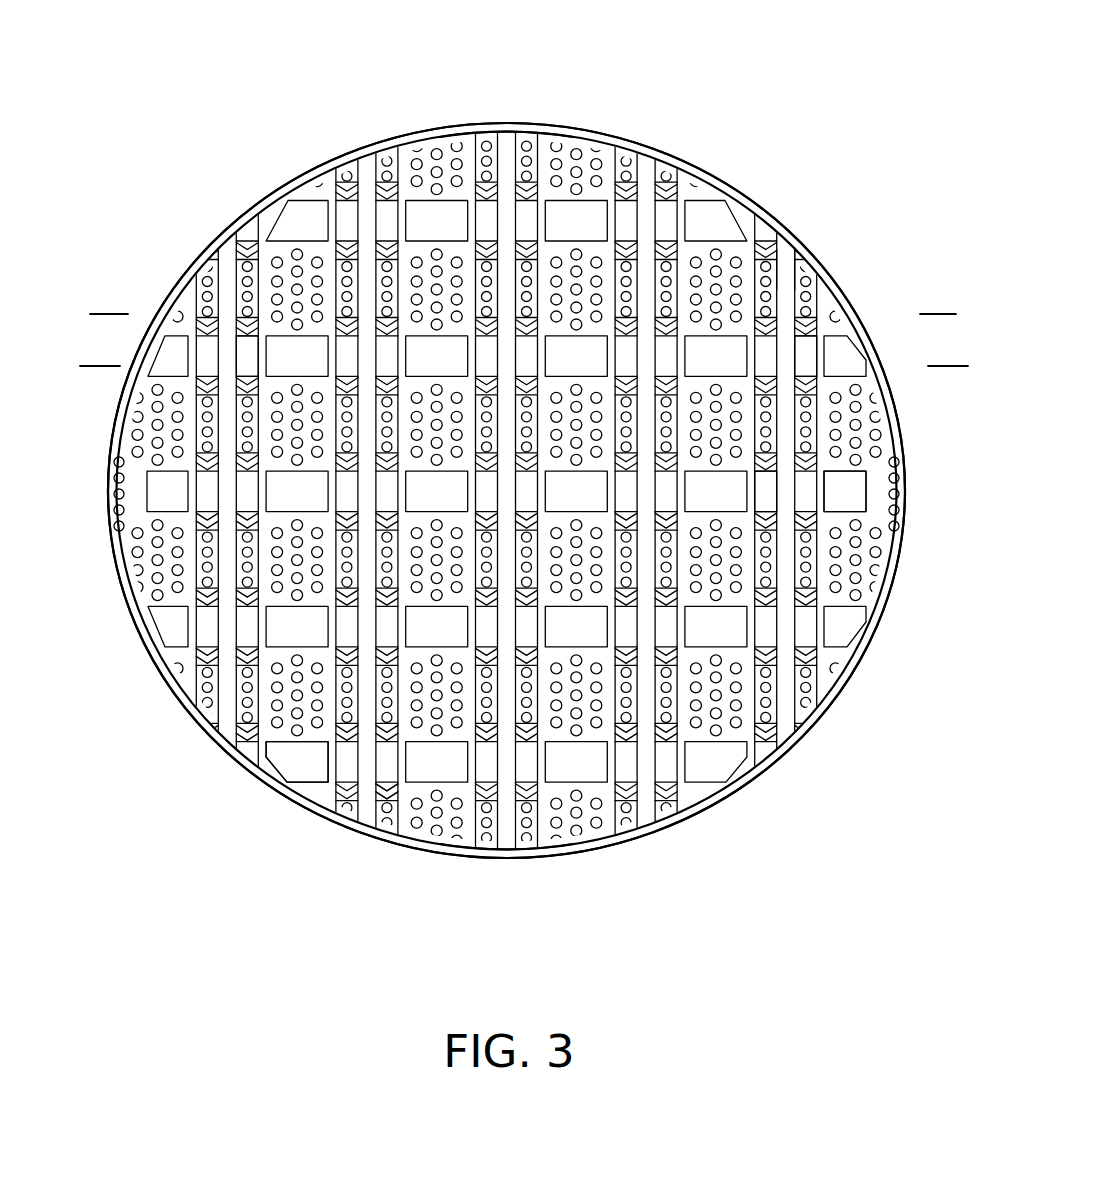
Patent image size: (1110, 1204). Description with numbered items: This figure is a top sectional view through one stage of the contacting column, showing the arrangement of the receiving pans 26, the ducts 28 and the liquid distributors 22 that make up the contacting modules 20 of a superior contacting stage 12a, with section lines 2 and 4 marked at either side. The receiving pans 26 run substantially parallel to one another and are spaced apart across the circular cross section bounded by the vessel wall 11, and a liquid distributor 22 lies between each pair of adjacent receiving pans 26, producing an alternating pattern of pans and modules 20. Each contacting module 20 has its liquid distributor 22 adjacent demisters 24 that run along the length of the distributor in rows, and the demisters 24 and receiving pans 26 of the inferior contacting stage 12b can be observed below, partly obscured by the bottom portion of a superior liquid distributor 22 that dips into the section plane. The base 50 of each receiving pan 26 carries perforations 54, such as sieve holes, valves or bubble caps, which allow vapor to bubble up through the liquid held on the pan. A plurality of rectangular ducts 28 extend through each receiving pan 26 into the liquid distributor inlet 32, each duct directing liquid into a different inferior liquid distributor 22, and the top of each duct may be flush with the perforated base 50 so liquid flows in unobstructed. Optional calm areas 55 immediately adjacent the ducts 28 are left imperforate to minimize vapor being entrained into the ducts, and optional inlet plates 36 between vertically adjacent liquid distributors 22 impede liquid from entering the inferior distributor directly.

The section line 2 is at (110, 303).
The section line 4 is at (100, 355).
The outer wall 11 is at (560, 128).
The superior contacting stage 12a is at (500, 100).
The inferior contacting stage 12b is at (499, 808).
The contacting module 20 is at (172, 244).
The liquid distributor 22 is at (641, 199).
The demister 24 is at (389, 790).
The receiving pan 26 is at (426, 143).
The duct 28 is at (577, 200).
The liquid distributor inlet 32 is at (252, 350).
The inlet plate 36 is at (780, 270).
The base 50 is at (281, 285).
The perforation 54 is at (527, 140).
The calm area 55 is at (857, 460).